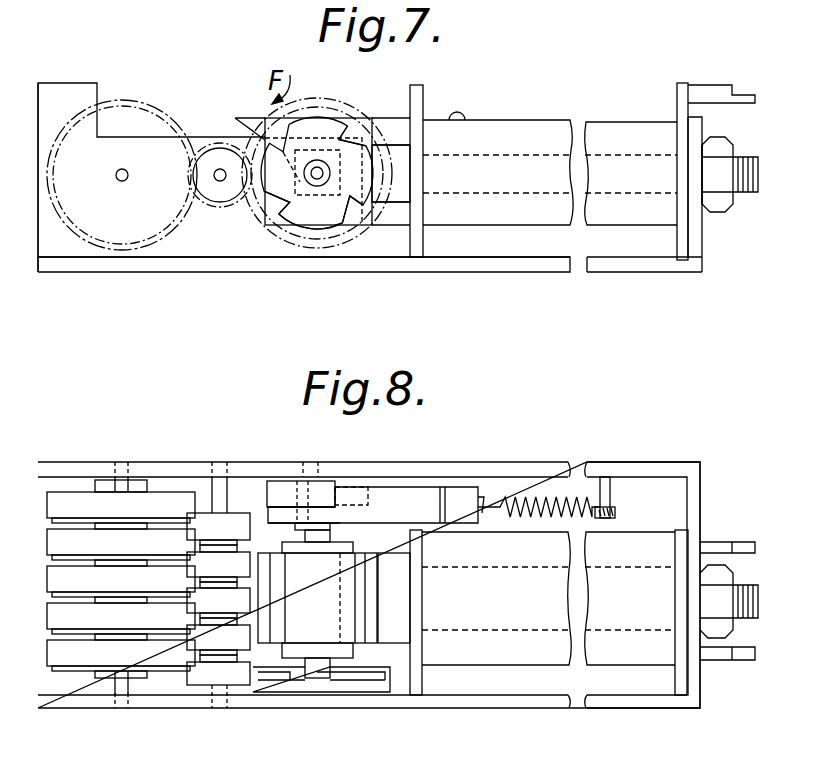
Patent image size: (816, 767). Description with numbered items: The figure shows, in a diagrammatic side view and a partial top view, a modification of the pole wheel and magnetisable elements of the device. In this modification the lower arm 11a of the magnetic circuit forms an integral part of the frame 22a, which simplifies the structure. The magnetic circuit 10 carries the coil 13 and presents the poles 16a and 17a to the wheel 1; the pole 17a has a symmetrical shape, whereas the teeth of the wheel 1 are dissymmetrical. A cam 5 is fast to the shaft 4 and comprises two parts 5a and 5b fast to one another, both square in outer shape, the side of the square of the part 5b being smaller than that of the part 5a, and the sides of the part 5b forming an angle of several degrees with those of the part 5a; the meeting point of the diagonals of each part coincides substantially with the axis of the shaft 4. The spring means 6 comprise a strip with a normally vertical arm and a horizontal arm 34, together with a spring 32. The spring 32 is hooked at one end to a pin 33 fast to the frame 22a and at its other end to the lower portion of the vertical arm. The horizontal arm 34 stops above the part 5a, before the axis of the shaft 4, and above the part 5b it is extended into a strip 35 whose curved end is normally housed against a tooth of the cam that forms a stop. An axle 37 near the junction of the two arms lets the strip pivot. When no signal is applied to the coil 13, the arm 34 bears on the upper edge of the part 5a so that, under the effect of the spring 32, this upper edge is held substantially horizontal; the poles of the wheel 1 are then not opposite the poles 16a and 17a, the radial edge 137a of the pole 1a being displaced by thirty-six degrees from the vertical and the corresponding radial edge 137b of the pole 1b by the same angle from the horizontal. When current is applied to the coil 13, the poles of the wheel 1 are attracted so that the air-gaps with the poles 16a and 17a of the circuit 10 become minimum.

In FIG. 7, the wheel 1 is at (302, 207).
In FIG. 7, the pole 1a is at (311, 228).
In FIG. 7, the pole 1b is at (363, 150).
In FIG. 8, the shaft 4 is at (330, 542).
In FIG. 8, the cam 5 is at (247, 496).
In FIG. 8, the part of the cam 5a is at (296, 490).
In FIG. 8, the part of the cam 5b is at (303, 528).
In FIG. 8, the spring means 6 is at (380, 499).
In FIG. 7, the circuit 10 is at (551, 245).
In FIG. 7, the lower arm 11a is at (490, 262).
In FIG. 7, the coil 13 is at (500, 140).
In FIG. 7, the pole 16a is at (340, 248).
In FIG. 7, the pole 17a is at (398, 181).
In FIG. 7, the frame 22a is at (152, 262).
In FIG. 8, the frame 22a is at (620, 470).
In FIG. 8, the spring 32 is at (547, 497).
In FIG. 8, the pin 33 is at (606, 493).
In FIG. 8, the horizontal arm 34 is at (377, 497).
In FIG. 8, the strip 35 is at (281, 513).
In FIG. 8, the axle 37 is at (455, 484).
In FIG. 7, the radial edge 137a is at (282, 215).
In FIG. 7, the stop 137b is at (355, 205).